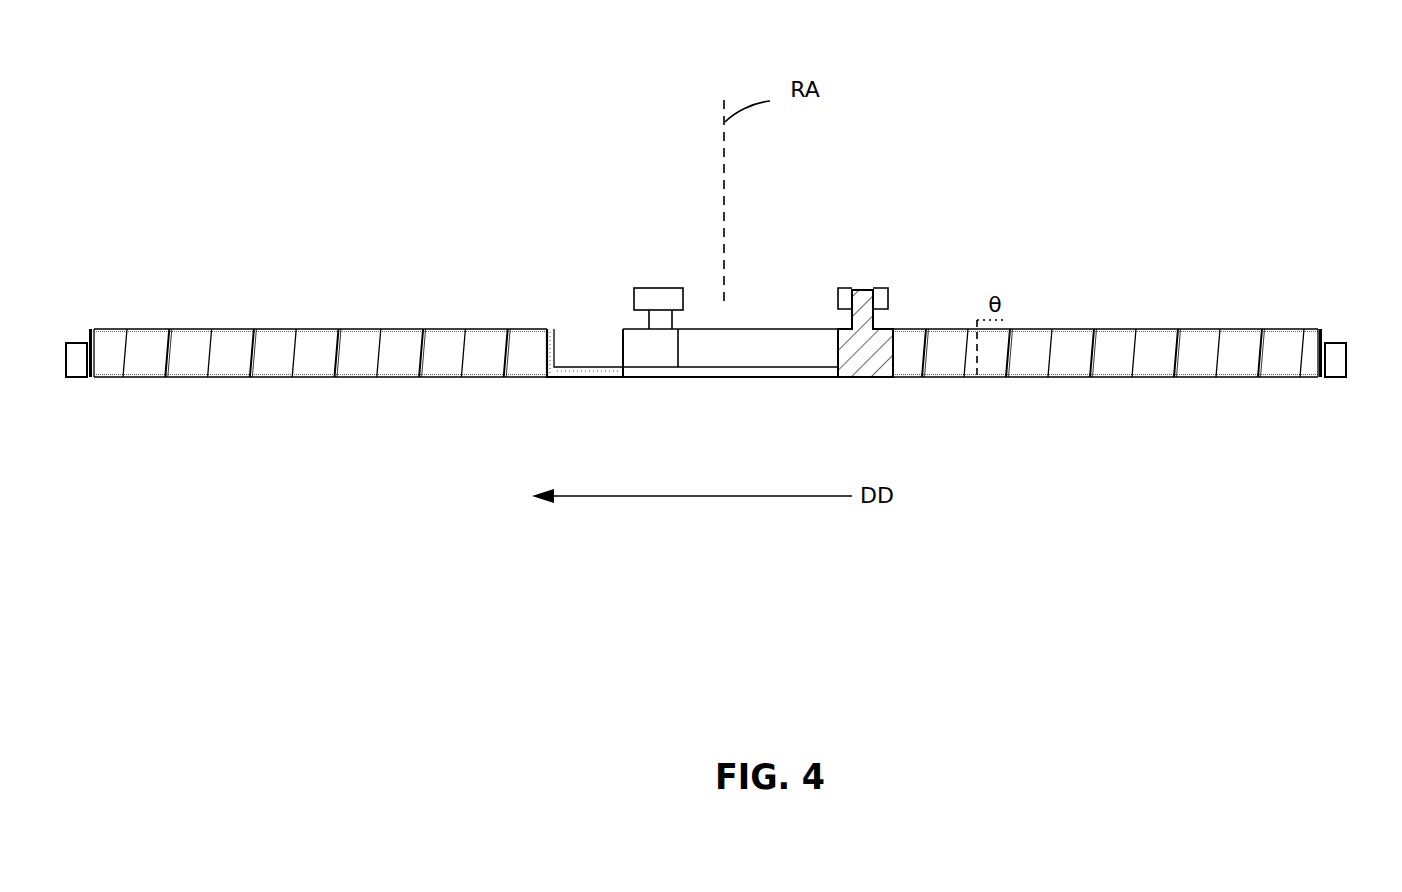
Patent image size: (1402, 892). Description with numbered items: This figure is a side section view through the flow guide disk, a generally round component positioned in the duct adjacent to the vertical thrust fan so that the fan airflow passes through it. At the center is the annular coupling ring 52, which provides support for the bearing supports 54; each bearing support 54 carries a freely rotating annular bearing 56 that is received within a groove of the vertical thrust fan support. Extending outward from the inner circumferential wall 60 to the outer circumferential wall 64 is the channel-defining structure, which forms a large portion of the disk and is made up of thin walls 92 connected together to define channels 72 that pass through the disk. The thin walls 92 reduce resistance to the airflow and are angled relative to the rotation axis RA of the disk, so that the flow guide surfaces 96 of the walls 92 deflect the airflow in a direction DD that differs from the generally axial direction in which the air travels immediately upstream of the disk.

The annular coupling ring 52 is at (565, 378).
The bearing support 54 is at (874, 323).
The annular bearing 56 is at (840, 295).
The inner circumferential wall 60 is at (556, 350).
The outer circumferential wall 64 is at (87, 334).
The channel 72 is at (310, 345).
The thin wall 92 is at (167, 356).
The flow guide surface 96 is at (228, 336).